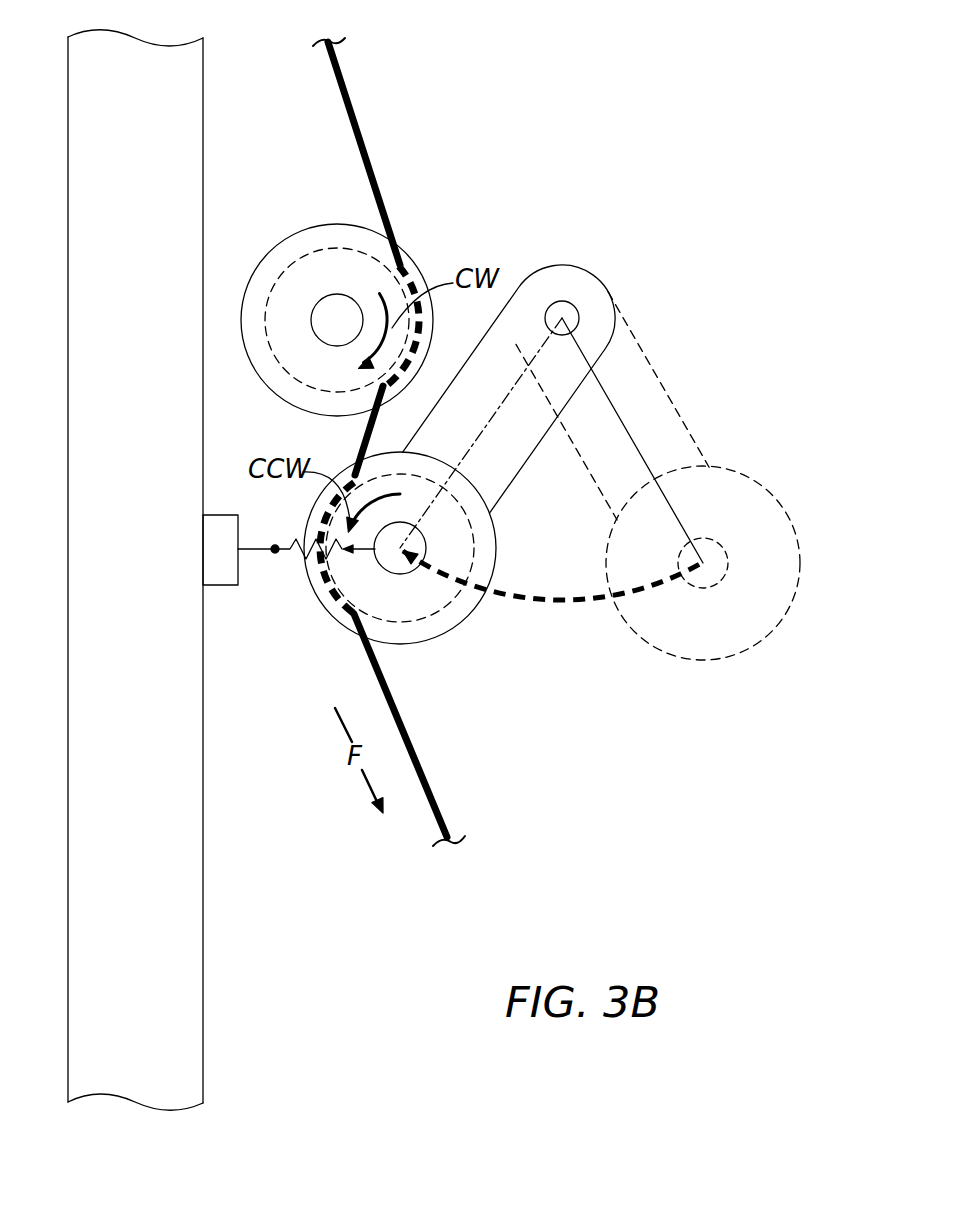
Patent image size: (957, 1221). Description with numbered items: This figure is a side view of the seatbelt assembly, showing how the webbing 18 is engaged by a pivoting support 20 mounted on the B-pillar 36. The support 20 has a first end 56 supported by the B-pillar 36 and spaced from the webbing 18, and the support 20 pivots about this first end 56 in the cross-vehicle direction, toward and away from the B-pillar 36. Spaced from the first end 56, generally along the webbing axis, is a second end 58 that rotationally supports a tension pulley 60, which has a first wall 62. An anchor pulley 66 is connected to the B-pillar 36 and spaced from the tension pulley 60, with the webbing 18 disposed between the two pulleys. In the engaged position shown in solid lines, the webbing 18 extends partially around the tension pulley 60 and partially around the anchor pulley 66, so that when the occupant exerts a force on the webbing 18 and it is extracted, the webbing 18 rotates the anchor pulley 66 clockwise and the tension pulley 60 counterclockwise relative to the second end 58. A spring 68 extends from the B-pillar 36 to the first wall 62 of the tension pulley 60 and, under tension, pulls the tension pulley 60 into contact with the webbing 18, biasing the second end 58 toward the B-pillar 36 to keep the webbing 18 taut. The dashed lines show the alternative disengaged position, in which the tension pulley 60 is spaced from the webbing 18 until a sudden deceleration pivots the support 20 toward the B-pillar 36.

The webbing 18 is at (342, 72).
The support 20 is at (556, 264).
The B-pillar 36 is at (204, 770).
The first end 56 is at (577, 267).
The second end 58 is at (503, 558).
The tension pulley 60 is at (424, 652).
The first wall 62 is at (447, 634).
The anchor pulley 66 is at (303, 225).
The spring 68 is at (292, 558).